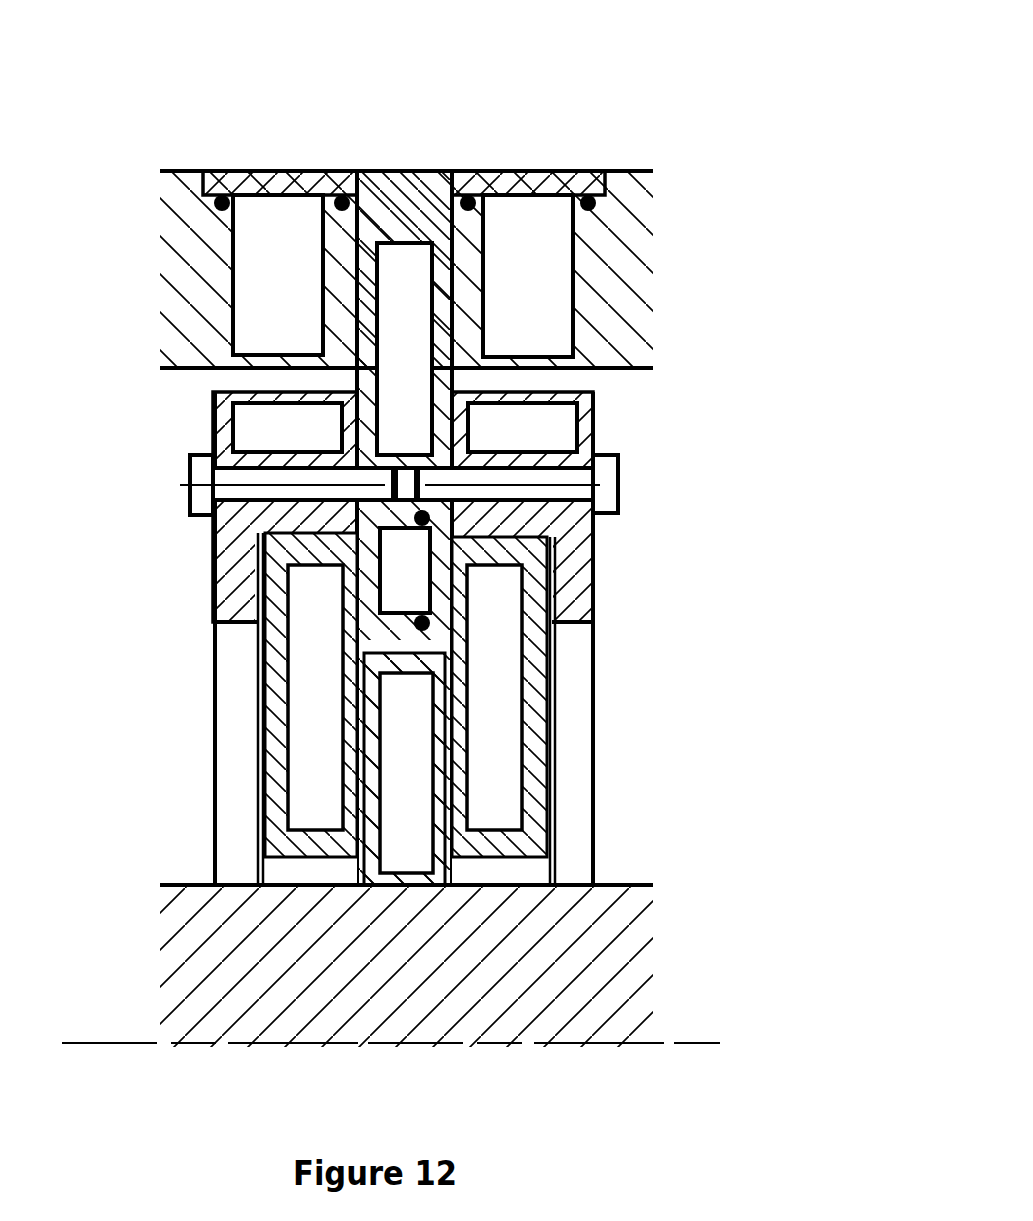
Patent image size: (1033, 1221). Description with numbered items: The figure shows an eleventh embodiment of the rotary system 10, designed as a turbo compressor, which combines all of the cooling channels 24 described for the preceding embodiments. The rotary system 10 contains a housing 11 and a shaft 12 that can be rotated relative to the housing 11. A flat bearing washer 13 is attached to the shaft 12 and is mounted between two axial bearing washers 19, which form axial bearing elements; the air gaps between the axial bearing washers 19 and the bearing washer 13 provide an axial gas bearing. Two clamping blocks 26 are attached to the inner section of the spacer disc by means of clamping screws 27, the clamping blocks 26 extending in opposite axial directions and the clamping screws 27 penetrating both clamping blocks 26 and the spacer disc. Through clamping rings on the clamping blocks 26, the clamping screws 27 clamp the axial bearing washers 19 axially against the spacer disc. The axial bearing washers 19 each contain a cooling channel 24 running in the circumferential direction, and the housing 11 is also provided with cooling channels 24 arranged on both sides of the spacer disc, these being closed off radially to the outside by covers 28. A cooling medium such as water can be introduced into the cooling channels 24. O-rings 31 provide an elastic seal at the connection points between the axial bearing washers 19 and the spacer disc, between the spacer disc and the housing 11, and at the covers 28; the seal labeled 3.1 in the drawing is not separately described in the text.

The rotary system 10 is at (697, 57).
The housing 11 is at (623, 213).
The shaft 12 is at (618, 1030).
The bearing washer 13 is at (455, 808).
The axial bearing washer 19 is at (280, 782).
The cooling channel 24 is at (270, 275).
The clamping block 26 is at (215, 417).
The clamping screw 27 is at (200, 495).
The cover 28 is at (280, 178).
The O-ring 31 is at (235, 178).
The sealing ring 3.1 is at (430, 512).